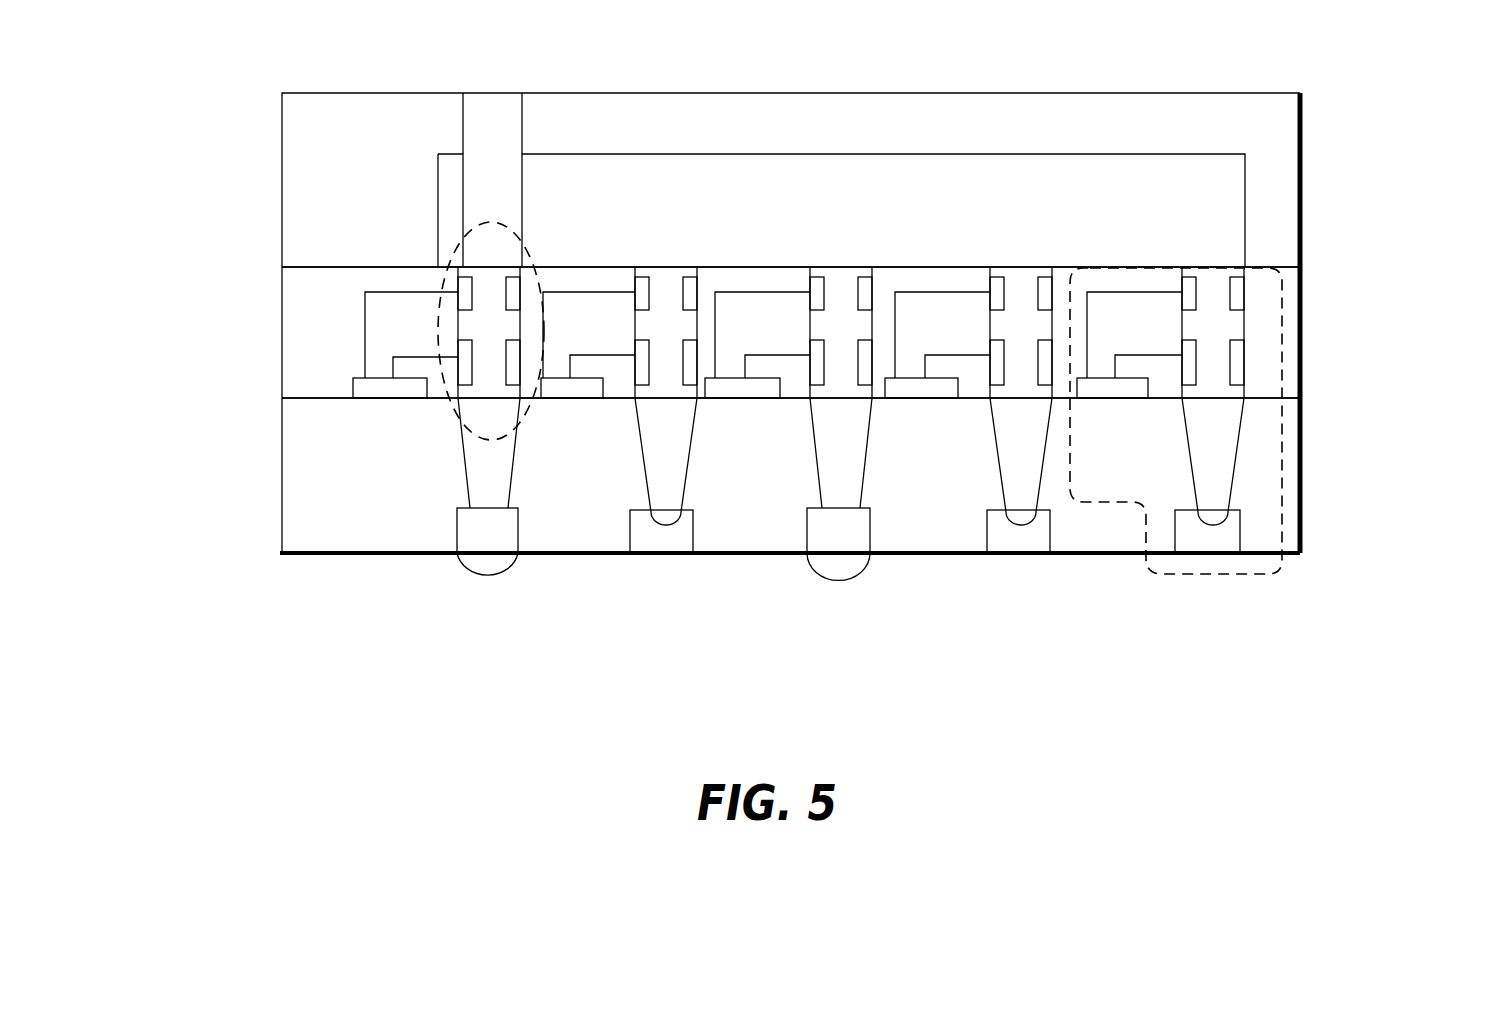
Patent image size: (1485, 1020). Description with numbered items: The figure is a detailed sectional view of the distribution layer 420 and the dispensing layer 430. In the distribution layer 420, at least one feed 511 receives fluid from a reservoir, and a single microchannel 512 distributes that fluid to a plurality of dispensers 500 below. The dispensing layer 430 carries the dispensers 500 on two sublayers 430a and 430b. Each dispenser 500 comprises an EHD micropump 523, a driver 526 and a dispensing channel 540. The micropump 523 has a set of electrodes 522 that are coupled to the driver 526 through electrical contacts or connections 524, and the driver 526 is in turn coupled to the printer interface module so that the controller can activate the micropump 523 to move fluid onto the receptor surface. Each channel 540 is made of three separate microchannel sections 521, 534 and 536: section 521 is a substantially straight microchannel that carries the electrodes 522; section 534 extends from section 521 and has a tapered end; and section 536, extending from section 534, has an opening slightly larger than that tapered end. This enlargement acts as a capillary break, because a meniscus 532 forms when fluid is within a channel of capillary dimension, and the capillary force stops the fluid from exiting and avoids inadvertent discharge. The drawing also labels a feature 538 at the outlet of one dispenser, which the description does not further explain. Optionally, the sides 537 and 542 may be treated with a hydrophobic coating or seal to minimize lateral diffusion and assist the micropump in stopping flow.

The distribution layer 420 is at (309, 148).
The feed 511 is at (508, 118).
The microchannel 512 is at (1220, 192).
The dispensing layer 430 is at (1378, 263).
The sublayer 430a is at (350, 303).
The sublayer 430b is at (350, 475).
The electrodes 522 is at (1240, 302).
The electrical contacts or connections 524 is at (410, 355).
The driver 526 is at (380, 399).
The EHD micropump 523 is at (444, 378).
The solder bump 538 is at (506, 568).
The meniscus 532 is at (662, 540).
The sides 537 is at (688, 448).
The microchannel section 521 is at (1018, 338).
The microchannel section 534 is at (995, 465).
The microchannel section 536 is at (1017, 541).
The sides 542 is at (1050, 536).
The dispenser 500 is at (1210, 555).
The dispensing channel 540 is at (1207, 353).